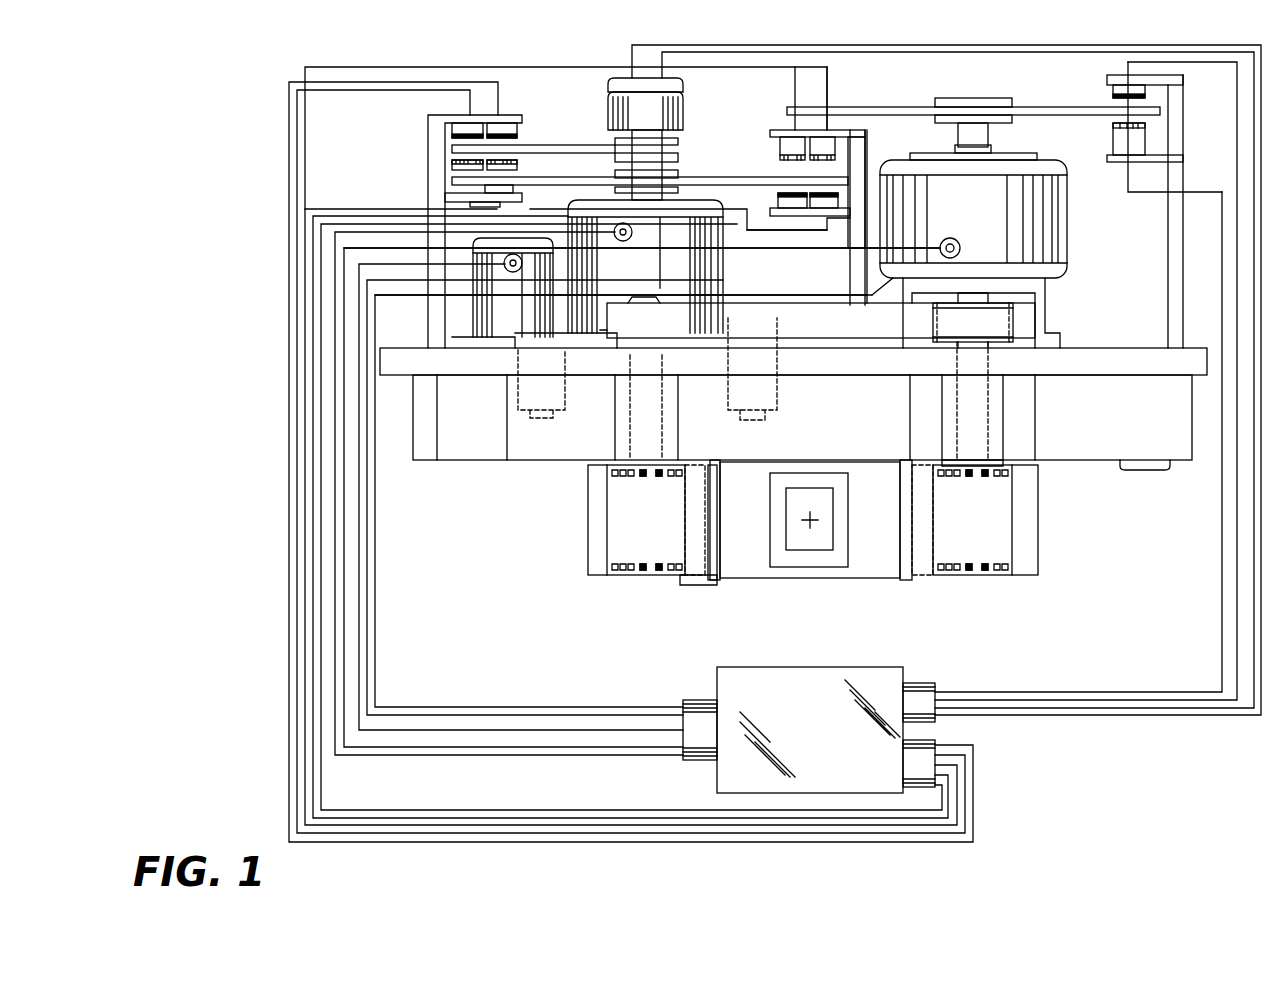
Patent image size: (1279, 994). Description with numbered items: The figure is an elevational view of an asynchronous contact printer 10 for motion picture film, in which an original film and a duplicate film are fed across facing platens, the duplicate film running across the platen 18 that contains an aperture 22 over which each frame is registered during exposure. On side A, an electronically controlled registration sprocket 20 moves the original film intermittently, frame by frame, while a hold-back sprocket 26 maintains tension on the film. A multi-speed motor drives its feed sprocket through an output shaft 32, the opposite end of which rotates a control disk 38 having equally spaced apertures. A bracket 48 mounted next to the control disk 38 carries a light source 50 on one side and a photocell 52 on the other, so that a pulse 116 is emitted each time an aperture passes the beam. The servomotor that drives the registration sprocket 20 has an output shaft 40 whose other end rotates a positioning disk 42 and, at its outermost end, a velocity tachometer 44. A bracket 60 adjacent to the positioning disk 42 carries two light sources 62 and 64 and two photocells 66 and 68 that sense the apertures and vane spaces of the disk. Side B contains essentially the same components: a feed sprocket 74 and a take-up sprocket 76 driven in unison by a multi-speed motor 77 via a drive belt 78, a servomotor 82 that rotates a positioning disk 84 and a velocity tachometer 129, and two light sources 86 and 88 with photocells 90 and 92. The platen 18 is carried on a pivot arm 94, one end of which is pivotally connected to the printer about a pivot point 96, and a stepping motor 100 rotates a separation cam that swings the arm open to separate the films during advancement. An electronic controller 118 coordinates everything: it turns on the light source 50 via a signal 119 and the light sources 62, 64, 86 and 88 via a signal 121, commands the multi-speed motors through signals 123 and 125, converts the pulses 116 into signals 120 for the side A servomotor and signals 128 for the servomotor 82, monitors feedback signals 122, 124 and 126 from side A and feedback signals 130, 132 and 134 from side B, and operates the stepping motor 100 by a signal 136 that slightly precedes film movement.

The asynchronous contact printer 10 is at (478, 538).
The second platen 18 is at (872, 560).
The registration sprocket 20 is at (588, 532).
The aperture 22 is at (800, 543).
The hold-back sprocket 26 is at (1030, 537).
The output shaft 32 is at (985, 138).
The control disk 38 is at (1060, 108).
The output shaft 40 is at (650, 148).
The positioning disk 42 is at (455, 150).
The velocity tachometer 44 is at (683, 112).
The bracket 48 is at (1172, 290).
The light source 50 is at (1145, 140).
The photocell 52 is at (1140, 90).
The bracket 60 is at (427, 168).
The light source 62 is at (510, 162).
The light source 64 is at (462, 170).
The photocell 66 is at (505, 125).
The photocell 68 is at (470, 124).
The feed sprocket 74 is at (966, 560).
The take-up sprocket 76 is at (632, 560).
The multi-speed motor 77 is at (1060, 225).
The drive belt 78 is at (840, 325).
The servomotor 82 is at (722, 268).
The positioning disk 84 is at (565, 180).
The light source 86 is at (828, 148).
The light source 88 is at (790, 150).
The photocell 90 is at (830, 185).
The photocell 92 is at (795, 212).
The pivot arm 94 is at (1050, 458).
The pivot point 96 is at (1130, 468).
The stepping motor 100 is at (472, 300).
The pulse 116 is at (1088, 690).
The electronic controller 118 is at (793, 667).
The signal 119 is at (1003, 692).
The signal 120 is at (607, 707).
The signal 121 is at (567, 828).
The feedback signal 122 is at (1045, 710).
The signal 123 is at (535, 714).
The feedback signal 124 is at (383, 845).
The signal 125 is at (498, 755).
The feedback signal 126 is at (478, 836).
The signal 128 is at (435, 750).
The velocity tachometer 129 is at (680, 83).
The feedback signal 130 is at (1136, 720).
The feedback signal 132 is at (558, 817).
The feedback signal 134 is at (637, 808).
The signal 136 is at (460, 728).